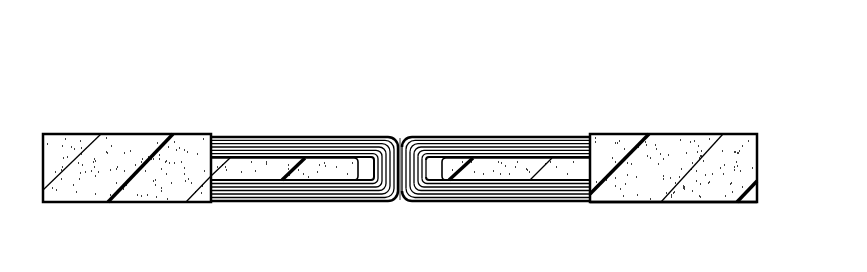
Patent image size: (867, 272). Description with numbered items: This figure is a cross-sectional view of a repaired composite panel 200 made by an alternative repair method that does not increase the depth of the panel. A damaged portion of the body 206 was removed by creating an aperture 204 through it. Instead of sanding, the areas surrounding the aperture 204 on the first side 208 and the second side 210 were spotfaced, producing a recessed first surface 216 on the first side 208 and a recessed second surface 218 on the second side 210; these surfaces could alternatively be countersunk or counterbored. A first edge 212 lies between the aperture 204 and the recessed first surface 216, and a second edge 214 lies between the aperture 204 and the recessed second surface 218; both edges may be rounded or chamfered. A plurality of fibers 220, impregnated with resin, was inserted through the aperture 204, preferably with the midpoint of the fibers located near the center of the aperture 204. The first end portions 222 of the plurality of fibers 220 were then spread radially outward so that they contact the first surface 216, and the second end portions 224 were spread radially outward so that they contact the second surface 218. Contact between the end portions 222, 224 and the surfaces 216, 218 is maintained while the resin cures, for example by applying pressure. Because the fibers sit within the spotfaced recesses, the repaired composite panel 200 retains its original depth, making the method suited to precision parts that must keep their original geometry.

The composite panel 200 is at (77, 92).
The body 206 is at (177, 114).
The first side 208 is at (688, 134).
The second side 210 is at (688, 203).
The aperture 204 is at (428, 160).
The first end portions 222 is at (267, 138).
The second end portions 224 is at (266, 200).
The first edge 212 is at (353, 138).
The second edge 214 is at (353, 200).
The recessed first surface 216 is at (499, 156).
The recessed second surface 218 is at (500, 201).
The plurality of fibers 220 is at (415, 203).